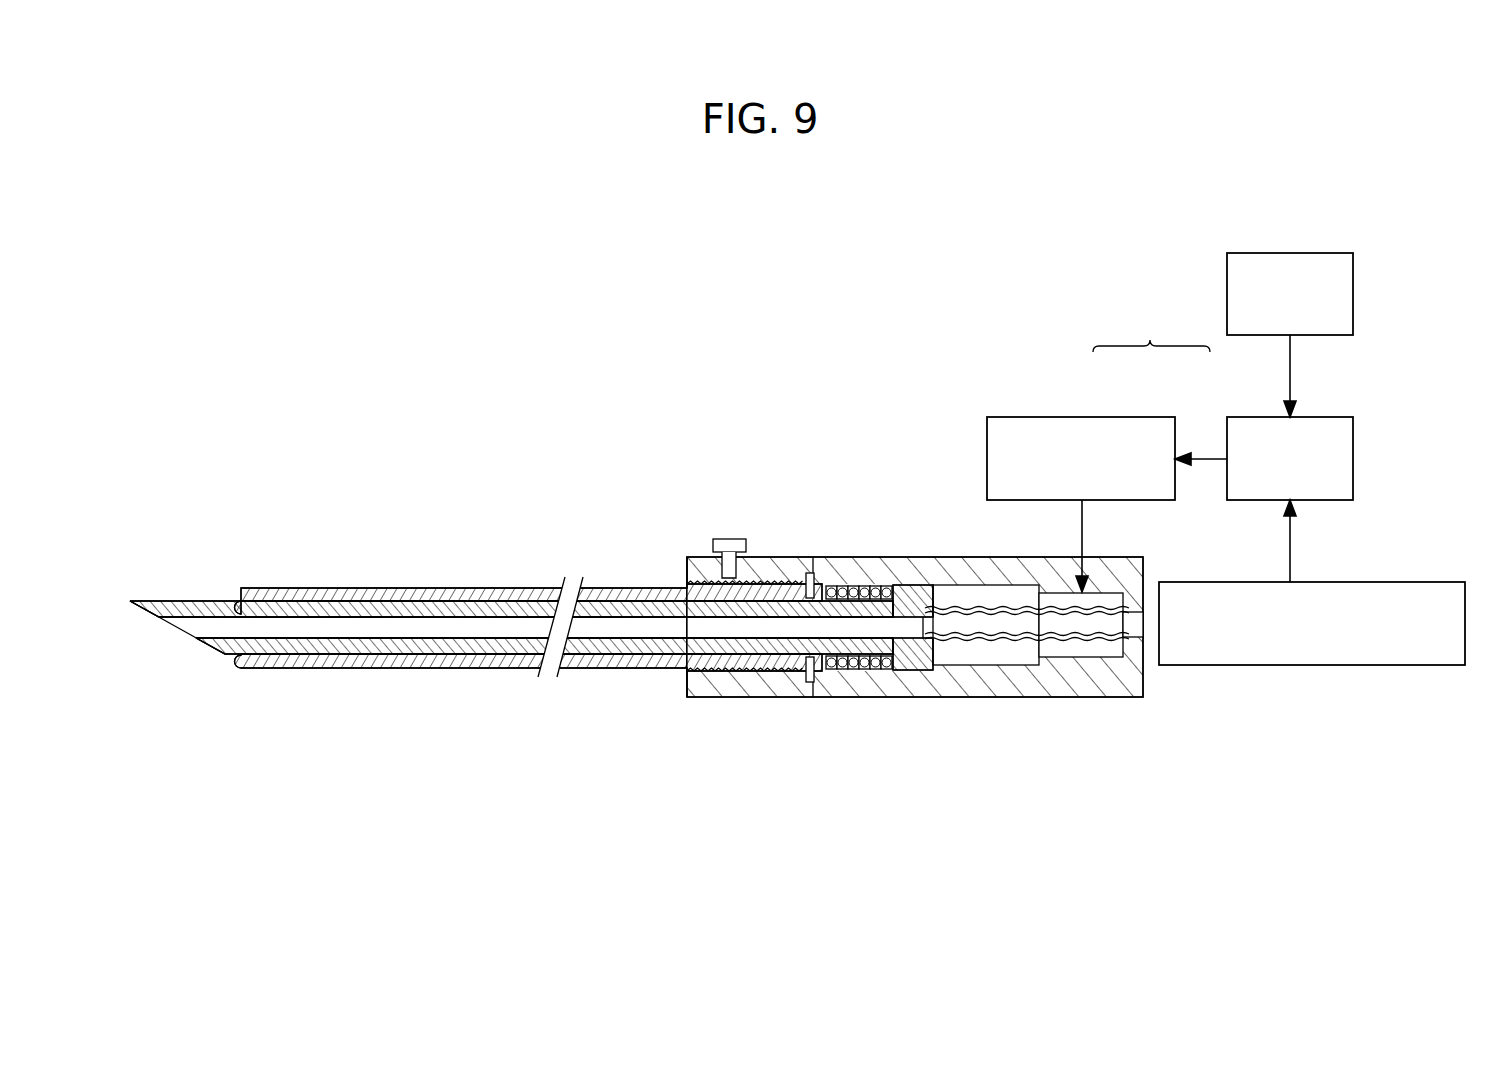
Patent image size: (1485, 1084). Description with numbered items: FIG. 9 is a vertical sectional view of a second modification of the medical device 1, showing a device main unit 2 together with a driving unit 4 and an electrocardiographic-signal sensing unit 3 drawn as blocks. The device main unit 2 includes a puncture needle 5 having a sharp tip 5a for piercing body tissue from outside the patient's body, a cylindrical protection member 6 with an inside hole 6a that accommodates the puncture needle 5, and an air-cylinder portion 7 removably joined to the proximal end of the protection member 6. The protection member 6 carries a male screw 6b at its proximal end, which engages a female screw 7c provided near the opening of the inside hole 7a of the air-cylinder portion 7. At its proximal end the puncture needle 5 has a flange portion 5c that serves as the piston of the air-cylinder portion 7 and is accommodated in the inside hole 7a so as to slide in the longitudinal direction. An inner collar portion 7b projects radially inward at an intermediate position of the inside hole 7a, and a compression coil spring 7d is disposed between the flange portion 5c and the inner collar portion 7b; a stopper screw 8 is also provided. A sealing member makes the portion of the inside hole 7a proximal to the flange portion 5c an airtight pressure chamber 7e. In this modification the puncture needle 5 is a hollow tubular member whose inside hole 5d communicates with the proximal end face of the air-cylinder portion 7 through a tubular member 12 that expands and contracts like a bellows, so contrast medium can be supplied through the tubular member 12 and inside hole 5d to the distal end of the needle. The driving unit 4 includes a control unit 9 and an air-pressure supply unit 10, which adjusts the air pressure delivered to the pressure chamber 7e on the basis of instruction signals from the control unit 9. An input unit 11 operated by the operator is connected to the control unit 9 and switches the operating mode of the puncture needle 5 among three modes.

The puncture system 1 is at (856, 303).
The device main unit 2 is at (676, 494).
The electrocardiographic-signal sensing unit 3 is at (1292, 668).
The driving unit 4 is at (1150, 339).
The puncture needle 5 is at (204, 600).
The tip 5a is at (133, 600).
The flange portion 5c is at (917, 585).
The inside hole 5d is at (607, 627).
The protection member 6 is at (337, 588).
The inside hole 6a is at (425, 609).
The male screw 6b is at (776, 576).
The air-cylinder portion 7 is at (957, 555).
The inside hole 7a is at (951, 660).
The inner collar portion 7b is at (813, 669).
The female screw 7c is at (746, 678).
The compression coil spring 7d is at (863, 585).
The pressure chamber 7e is at (1072, 650).
The stopper screw 8 is at (729, 538).
The control unit 9 is at (1237, 416).
The air-pressure supply unit 10 is at (1115, 415).
The input unit 11 is at (1292, 250).
The tubular member 12 is at (1008, 652).